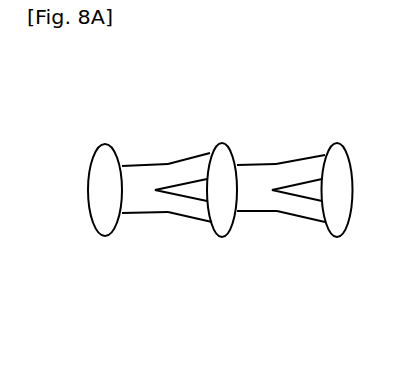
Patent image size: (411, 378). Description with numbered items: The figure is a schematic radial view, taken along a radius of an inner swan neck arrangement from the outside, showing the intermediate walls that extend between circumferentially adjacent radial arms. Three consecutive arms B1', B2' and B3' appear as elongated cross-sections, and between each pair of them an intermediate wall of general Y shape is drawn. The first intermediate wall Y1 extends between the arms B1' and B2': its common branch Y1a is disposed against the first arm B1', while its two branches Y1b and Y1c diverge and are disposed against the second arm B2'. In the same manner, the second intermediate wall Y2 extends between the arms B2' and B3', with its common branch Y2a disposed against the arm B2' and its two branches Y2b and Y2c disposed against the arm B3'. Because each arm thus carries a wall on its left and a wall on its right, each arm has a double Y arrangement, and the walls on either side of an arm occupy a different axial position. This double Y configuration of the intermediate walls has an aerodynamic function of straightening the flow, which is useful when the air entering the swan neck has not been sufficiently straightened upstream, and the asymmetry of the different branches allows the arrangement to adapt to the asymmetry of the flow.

The arm B1' is at (105, 143).
The arm B2' is at (219, 144).
The arm B3' is at (335, 144).
The intermediate wall Y1 is at (149, 223).
The common branch Y1a is at (133, 198).
The branch Y1b is at (187, 166).
The branch Y1c is at (189, 208).
The intermediate wall Y2 is at (263, 223).
The common branch Y2a is at (248, 210).
The branch Y2b is at (305, 168).
The branch Y2c is at (303, 208).